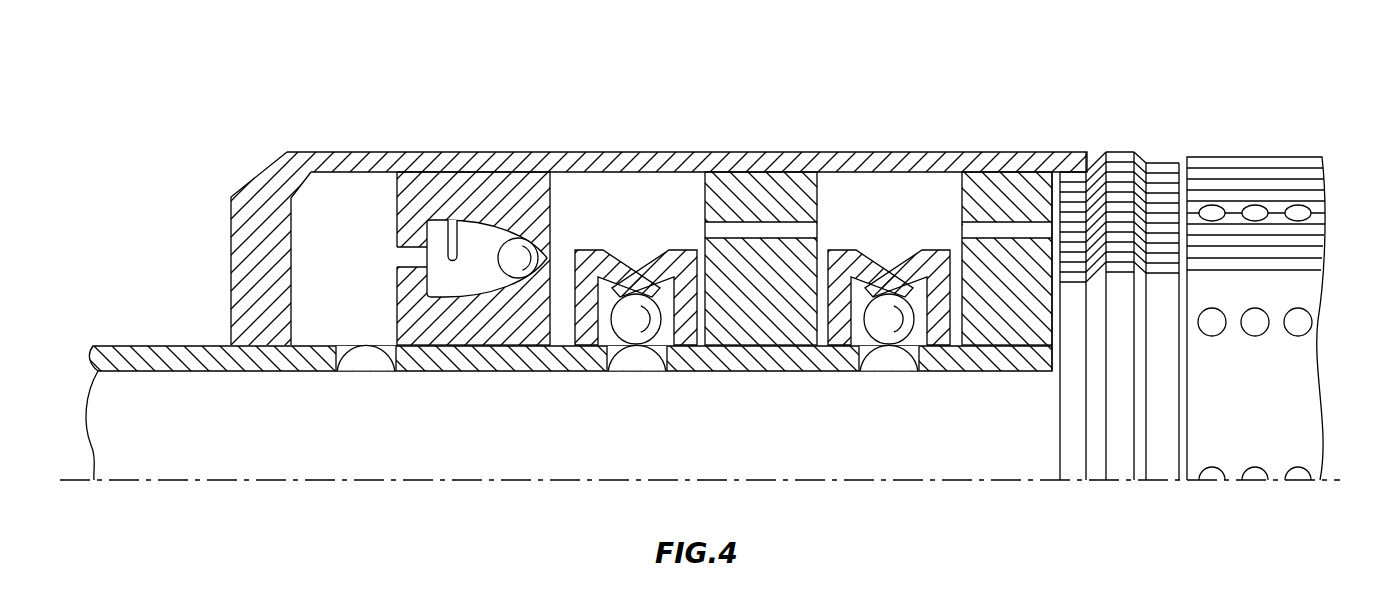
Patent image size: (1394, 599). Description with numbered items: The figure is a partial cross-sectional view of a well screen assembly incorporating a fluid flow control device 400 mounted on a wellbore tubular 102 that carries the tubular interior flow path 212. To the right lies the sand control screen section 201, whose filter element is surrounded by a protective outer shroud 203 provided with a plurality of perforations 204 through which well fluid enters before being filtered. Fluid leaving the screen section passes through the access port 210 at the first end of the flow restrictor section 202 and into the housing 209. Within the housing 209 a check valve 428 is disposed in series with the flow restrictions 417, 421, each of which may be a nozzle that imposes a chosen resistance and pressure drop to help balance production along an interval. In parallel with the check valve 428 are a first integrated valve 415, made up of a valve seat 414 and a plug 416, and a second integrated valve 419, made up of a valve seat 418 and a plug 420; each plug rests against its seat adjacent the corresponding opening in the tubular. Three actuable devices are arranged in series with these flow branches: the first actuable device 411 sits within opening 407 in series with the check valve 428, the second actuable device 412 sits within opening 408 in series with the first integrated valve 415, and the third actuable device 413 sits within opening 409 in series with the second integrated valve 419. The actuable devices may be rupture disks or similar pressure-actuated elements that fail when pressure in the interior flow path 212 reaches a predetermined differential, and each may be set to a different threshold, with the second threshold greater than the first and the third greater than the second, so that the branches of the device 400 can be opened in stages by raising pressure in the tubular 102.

The fluid flow control device 400 is at (158, 123).
The wellbore tubular 102 is at (171, 372).
The sand control screen section 201 is at (1175, 143).
The flow restrictor section 202 is at (1023, 142).
The protective outer shroud 203 is at (1258, 168).
The perforations 204 is at (1296, 207).
The housing 209 is at (687, 153).
The access port 210 is at (1066, 318).
The tubular interior flow path 212 is at (992, 469).
The opening 407 is at (338, 377).
The opening 408 is at (623, 376).
The opening 409 is at (872, 376).
The first actuable device 411 is at (366, 360).
The second actuable device 412 is at (637, 360).
The third actuable device 413 is at (890, 360).
The valve seat 414 is at (580, 250).
The first integrated valve 415 is at (684, 245).
The plug 416 is at (632, 295).
The flow restriction 417 is at (775, 173).
The valve seat 418 is at (843, 250).
The second integrated valve 419 is at (930, 250).
The plug 420 is at (883, 298).
The flow restriction 421 is at (978, 172).
The check valve 428 is at (468, 176).